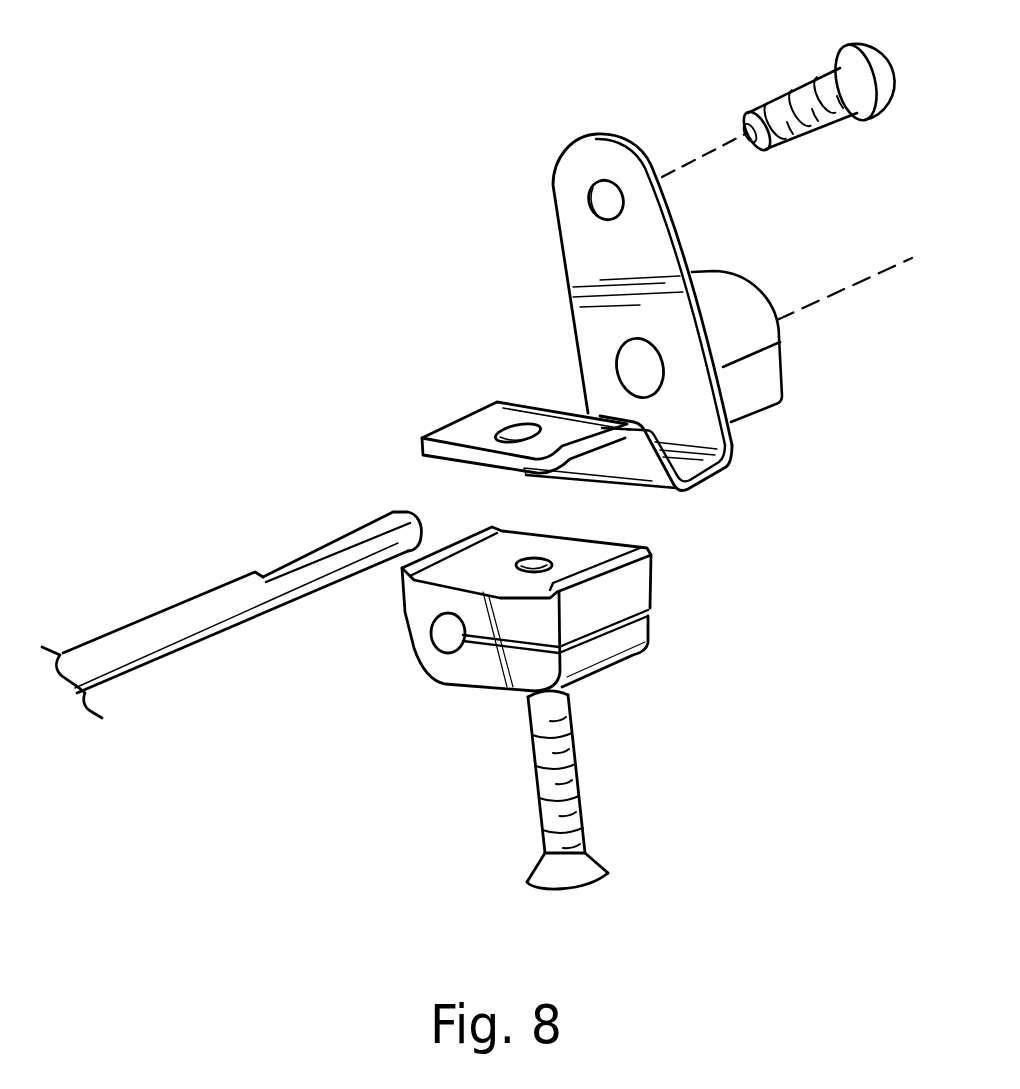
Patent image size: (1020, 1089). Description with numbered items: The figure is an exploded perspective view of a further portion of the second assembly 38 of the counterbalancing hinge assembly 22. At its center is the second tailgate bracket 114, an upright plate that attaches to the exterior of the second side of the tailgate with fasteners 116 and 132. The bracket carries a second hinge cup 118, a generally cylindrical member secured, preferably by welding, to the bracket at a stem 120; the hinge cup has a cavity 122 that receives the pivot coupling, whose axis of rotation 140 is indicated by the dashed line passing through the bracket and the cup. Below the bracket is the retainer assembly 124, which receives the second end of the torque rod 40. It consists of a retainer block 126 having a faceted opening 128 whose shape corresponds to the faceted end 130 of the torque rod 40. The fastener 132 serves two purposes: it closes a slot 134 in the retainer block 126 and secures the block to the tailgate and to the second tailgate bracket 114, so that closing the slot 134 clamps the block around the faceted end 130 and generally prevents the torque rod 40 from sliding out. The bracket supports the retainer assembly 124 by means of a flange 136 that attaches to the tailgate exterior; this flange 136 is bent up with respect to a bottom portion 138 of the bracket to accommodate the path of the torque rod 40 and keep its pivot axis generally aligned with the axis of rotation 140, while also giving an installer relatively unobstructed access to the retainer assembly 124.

The counterbalancing hinge assembly 22 is at (112, 522).
The second assembly 38 is at (715, 682).
The torque rod 40 is at (165, 638).
The second tailgate bracket 114 is at (677, 235).
The fastener 116 is at (782, 103).
The second hinge cup 118 is at (768, 395).
The stem 120 is at (630, 363).
The cavity 122 is at (737, 312).
The retainer assembly 124 is at (480, 720).
The retainer block 126 is at (650, 578).
The faceted opening 128 is at (437, 640).
The faceted end 130 is at (298, 558).
The fastener 132 is at (598, 862).
The slot 134 is at (645, 607).
The flange 136 is at (460, 427).
The bottom portion 138 is at (692, 484).
The axis of rotation 140 is at (833, 297).